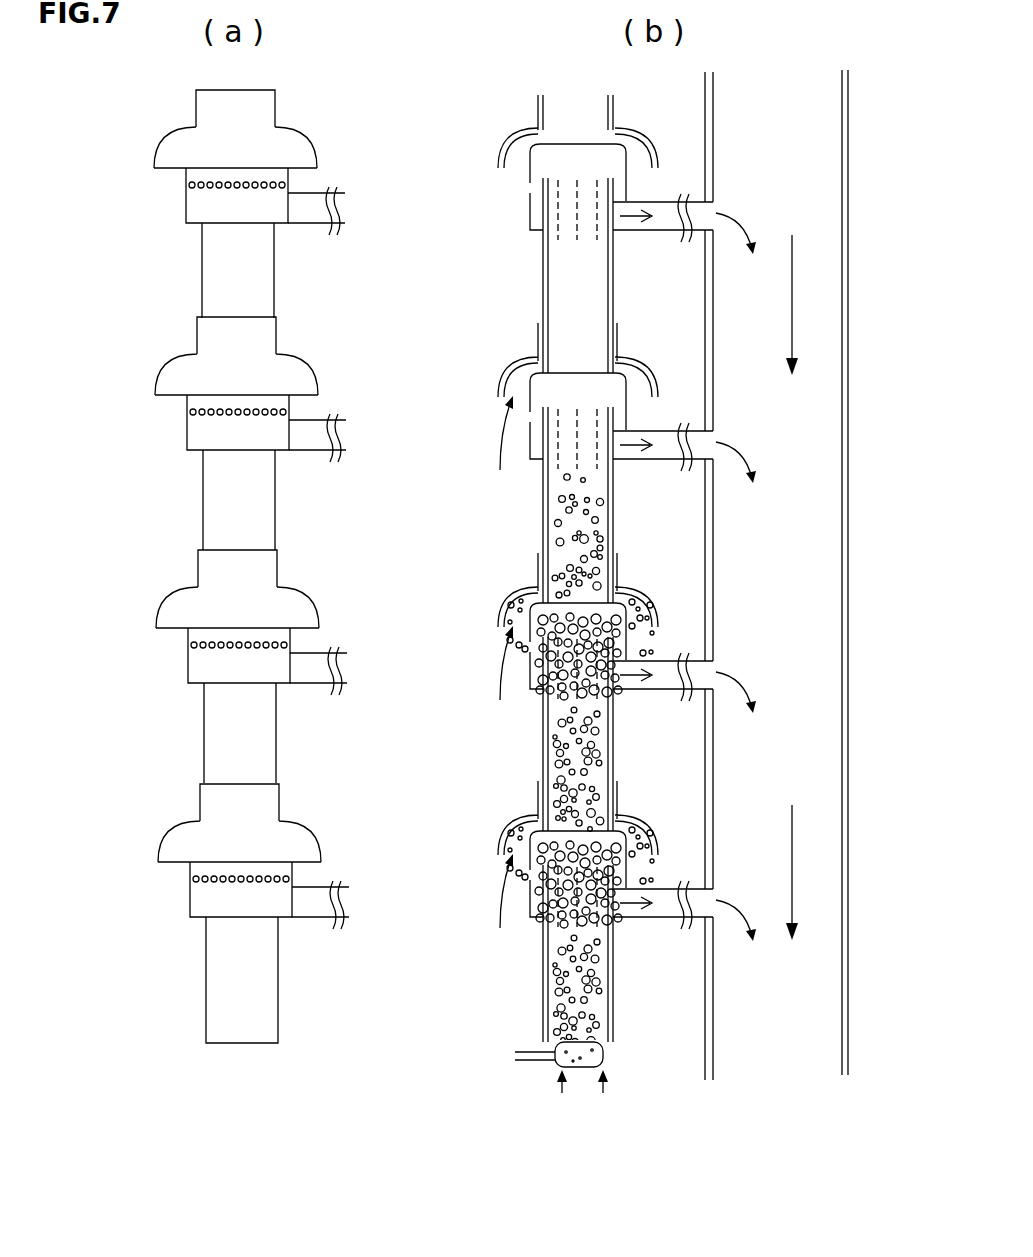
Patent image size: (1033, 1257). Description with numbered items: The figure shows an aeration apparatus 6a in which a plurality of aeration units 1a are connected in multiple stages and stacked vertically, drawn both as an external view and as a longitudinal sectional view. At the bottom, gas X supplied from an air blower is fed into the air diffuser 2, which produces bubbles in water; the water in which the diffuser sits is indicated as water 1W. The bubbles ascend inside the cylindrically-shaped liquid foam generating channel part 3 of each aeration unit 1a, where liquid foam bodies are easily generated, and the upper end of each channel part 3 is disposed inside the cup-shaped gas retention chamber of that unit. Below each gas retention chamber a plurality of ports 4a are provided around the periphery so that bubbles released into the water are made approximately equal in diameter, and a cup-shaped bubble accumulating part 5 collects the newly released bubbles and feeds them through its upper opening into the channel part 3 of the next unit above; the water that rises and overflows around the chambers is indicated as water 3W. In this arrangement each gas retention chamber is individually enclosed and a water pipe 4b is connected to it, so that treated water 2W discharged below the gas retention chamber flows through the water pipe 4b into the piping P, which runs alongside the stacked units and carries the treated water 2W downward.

The aeration apparatus 6a is at (147, 121).
The aeration unit 1a is at (148, 230).
The ports 4a is at (250, 186).
The water pipe 4b is at (640, 231).
The bubble accumulating part 5 is at (310, 612).
The liquid foam generating channel part 3 is at (275, 723).
The piping P is at (706, 773).
The treated water 2W is at (757, 597).
The overflow water 3W is at (498, 680).
The gas X is at (499, 1063).
The air diffuser 2 is at (604, 1057).
The feed water 1W is at (578, 1103).